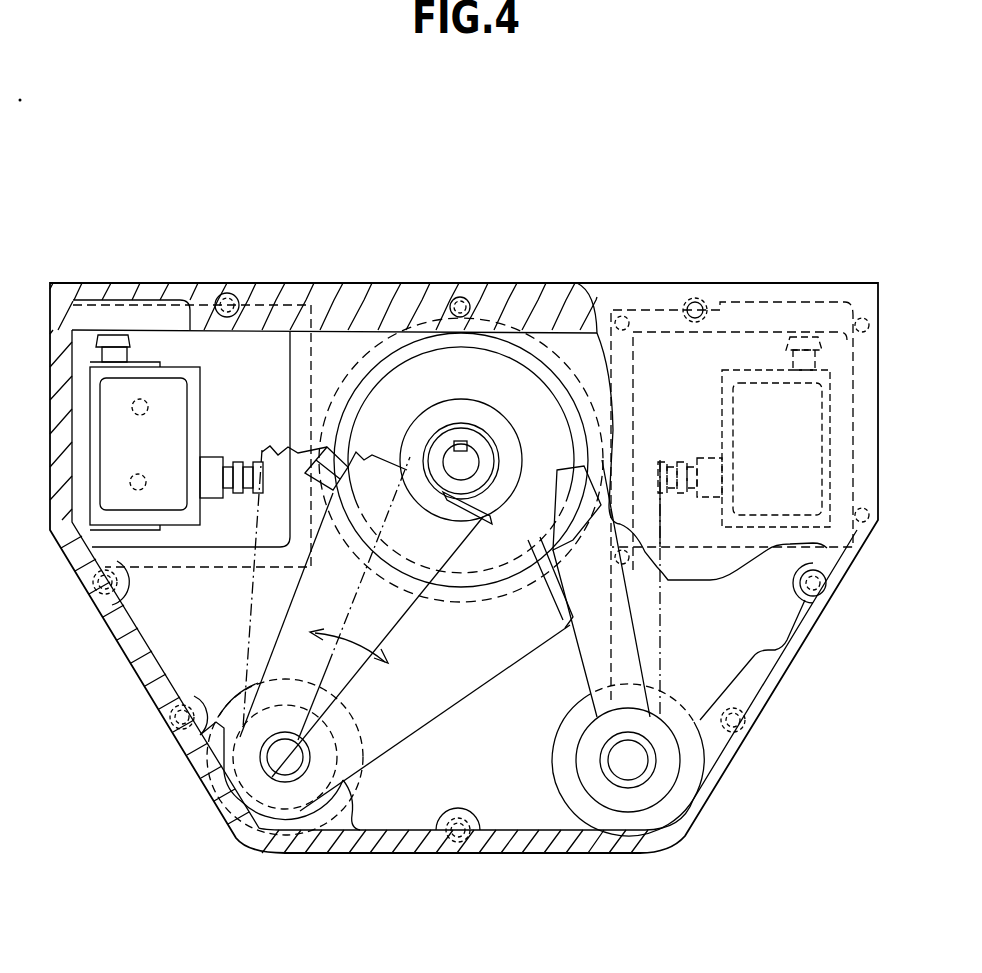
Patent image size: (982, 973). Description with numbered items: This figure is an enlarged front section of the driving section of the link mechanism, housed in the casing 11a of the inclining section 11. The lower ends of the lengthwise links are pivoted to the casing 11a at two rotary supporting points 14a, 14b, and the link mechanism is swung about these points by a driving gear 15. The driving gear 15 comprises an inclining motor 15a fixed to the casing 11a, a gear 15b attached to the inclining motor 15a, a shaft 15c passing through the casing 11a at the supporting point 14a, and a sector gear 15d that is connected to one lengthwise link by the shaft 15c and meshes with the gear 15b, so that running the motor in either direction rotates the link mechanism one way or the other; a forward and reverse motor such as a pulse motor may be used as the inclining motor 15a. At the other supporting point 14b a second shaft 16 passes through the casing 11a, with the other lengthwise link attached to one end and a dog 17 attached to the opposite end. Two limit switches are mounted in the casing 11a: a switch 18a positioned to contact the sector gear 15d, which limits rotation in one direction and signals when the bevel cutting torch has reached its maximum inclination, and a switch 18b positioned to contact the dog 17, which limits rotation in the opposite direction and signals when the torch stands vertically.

The inclining section 11 is at (392, 278).
The casing 11a is at (732, 750).
The rotary supporting point 14a is at (262, 850).
The rotary supporting point 14b is at (650, 777).
The driving gear 15 is at (212, 650).
The inclining motor 15a is at (518, 357).
The gear 15b is at (456, 427).
The shaft 15c is at (267, 770).
The sector gear 15d is at (443, 647).
The shaft 16 is at (607, 770).
The dog 17 is at (622, 637).
The switch 18a is at (173, 402).
The switch 18b is at (740, 413).